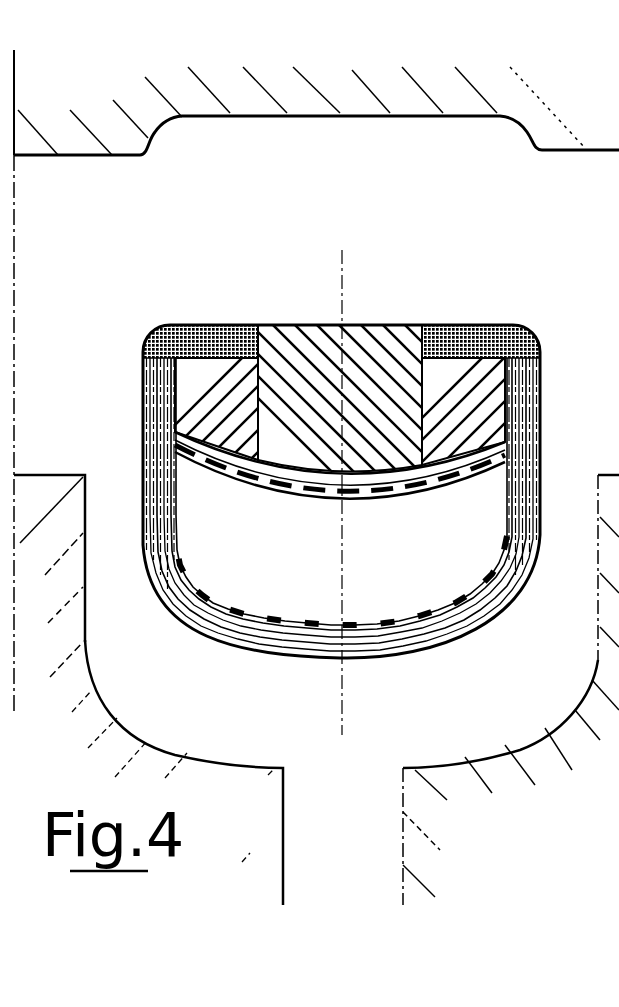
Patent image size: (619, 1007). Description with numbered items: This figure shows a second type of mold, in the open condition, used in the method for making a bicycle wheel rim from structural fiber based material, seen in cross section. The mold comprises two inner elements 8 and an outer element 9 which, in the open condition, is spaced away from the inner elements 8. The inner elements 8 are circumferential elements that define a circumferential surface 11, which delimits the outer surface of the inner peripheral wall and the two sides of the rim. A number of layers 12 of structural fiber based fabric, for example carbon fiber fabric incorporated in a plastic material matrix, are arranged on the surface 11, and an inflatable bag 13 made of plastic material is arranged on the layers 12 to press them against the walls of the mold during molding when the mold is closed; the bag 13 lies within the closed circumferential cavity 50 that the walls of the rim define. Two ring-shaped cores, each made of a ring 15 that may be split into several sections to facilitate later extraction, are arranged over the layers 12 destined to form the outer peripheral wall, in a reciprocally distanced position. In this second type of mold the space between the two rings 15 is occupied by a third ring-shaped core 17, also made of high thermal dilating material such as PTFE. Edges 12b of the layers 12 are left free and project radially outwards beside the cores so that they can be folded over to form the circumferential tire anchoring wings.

The outer element 9 is at (273, 116).
The inner elements 8 is at (62, 474).
The circumferential surface 11 is at (206, 755).
The layers of structural fiber based fabric 12 is at (345, 647).
The free edges of the layers of fabric 12b is at (213, 322).
The inflatable bag 13 is at (289, 622).
The ring sections of the cores 15 is at (232, 425).
The third ring-shaped core 17 is at (352, 348).
The closed circumferential cavity 50 is at (400, 562).